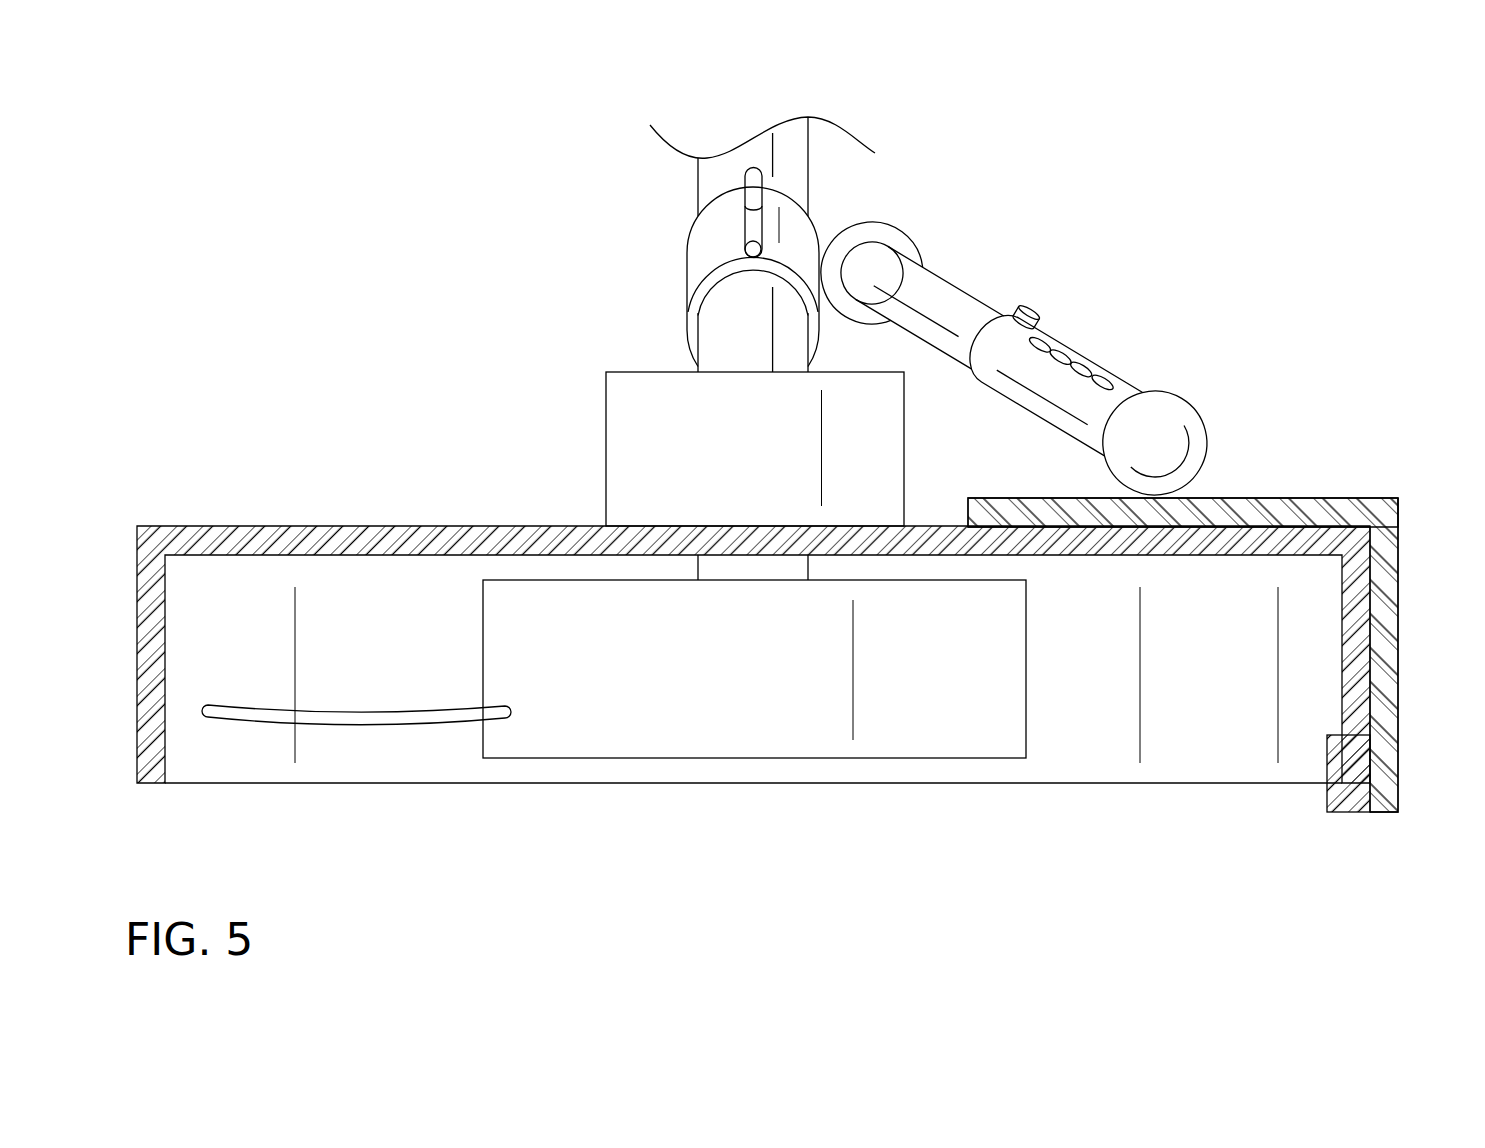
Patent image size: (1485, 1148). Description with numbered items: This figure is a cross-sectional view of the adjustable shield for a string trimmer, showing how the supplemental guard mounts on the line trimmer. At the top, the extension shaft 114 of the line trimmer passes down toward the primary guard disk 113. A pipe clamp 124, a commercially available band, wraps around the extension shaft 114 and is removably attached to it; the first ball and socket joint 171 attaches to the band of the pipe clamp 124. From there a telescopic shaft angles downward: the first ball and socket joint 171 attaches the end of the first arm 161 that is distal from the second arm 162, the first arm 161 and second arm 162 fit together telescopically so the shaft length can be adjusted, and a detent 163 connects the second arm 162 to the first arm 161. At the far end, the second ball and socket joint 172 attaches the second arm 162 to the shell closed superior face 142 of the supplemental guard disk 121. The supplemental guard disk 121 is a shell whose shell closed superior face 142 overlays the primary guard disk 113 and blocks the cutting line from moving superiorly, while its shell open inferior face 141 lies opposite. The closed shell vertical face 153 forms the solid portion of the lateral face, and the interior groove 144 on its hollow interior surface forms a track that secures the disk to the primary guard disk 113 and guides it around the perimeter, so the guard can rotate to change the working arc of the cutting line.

The primary guard disk 113 is at (507, 525).
The extension shaft 114 is at (790, 158).
The supplemental guard disk 121 is at (1398, 513).
The pipe clamp 124 is at (800, 240).
The shell open inferior face 141 is at (1292, 800).
The shell closed superior face 142 is at (1297, 497).
The interior groove 144 is at (1352, 803).
The closed shell vertical face 153 is at (1383, 753).
The first arm 161 is at (952, 295).
The second arm 162 is at (1080, 360).
The detent 163 is at (1028, 317).
The first ball and socket joint 171 is at (899, 233).
The second ball and socket joint 172 is at (1187, 422).